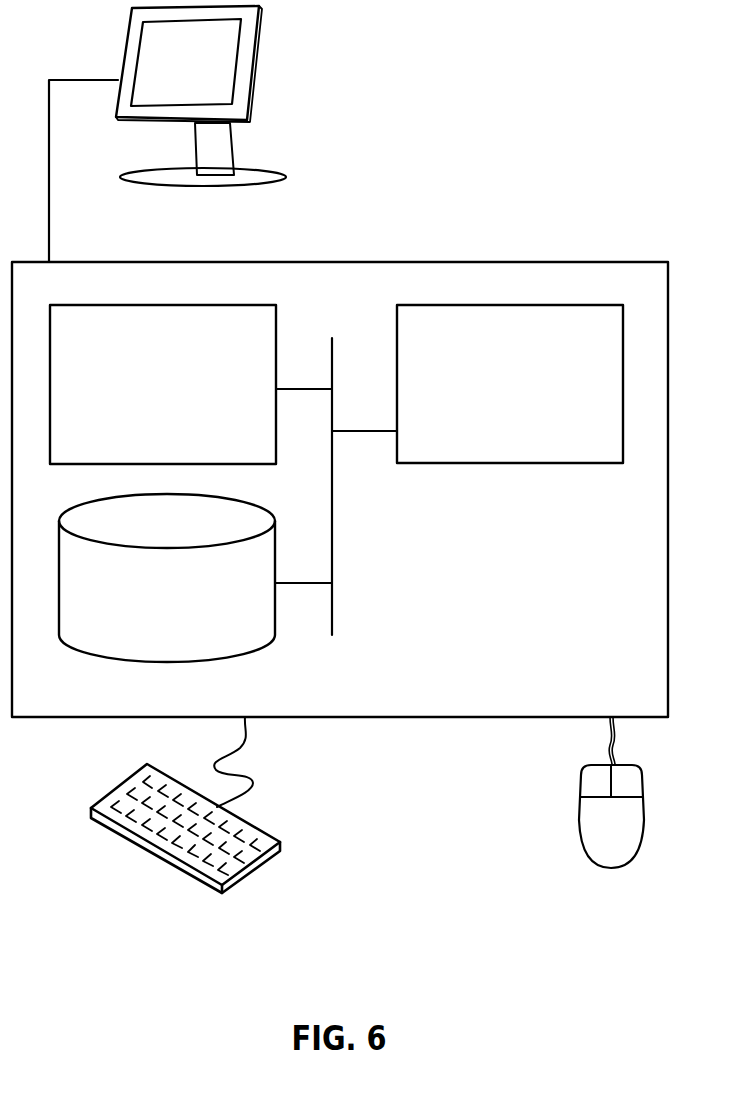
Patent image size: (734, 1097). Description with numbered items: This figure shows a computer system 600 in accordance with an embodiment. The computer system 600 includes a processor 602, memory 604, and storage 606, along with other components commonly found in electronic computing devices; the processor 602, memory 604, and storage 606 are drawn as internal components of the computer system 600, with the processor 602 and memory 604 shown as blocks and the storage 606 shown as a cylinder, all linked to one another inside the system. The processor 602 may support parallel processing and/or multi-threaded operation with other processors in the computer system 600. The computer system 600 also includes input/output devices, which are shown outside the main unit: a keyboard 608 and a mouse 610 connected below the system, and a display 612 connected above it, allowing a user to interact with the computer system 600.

The computer system 600 is at (387, 232).
The processor 602 is at (492, 397).
The memory 604 is at (143, 396).
The storage 606 is at (149, 607).
The keyboard 608 is at (110, 828).
The mouse 610 is at (590, 837).
The display 612 is at (201, 110).